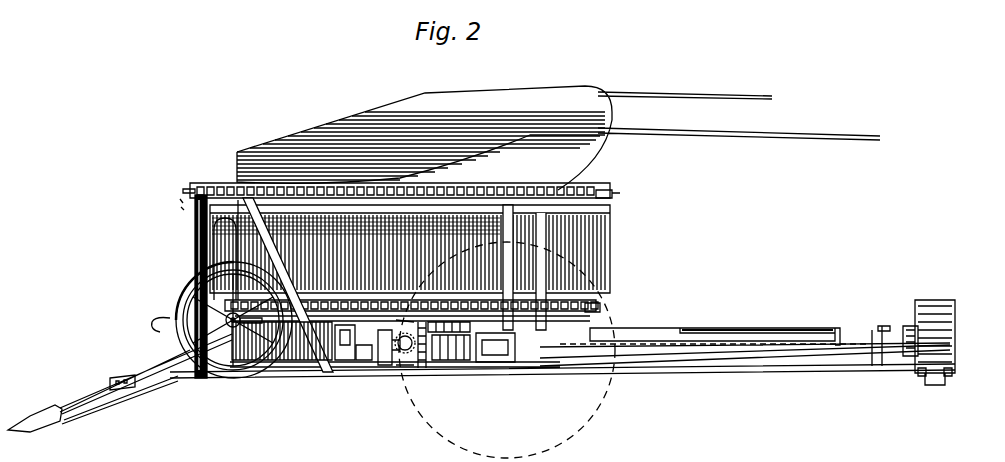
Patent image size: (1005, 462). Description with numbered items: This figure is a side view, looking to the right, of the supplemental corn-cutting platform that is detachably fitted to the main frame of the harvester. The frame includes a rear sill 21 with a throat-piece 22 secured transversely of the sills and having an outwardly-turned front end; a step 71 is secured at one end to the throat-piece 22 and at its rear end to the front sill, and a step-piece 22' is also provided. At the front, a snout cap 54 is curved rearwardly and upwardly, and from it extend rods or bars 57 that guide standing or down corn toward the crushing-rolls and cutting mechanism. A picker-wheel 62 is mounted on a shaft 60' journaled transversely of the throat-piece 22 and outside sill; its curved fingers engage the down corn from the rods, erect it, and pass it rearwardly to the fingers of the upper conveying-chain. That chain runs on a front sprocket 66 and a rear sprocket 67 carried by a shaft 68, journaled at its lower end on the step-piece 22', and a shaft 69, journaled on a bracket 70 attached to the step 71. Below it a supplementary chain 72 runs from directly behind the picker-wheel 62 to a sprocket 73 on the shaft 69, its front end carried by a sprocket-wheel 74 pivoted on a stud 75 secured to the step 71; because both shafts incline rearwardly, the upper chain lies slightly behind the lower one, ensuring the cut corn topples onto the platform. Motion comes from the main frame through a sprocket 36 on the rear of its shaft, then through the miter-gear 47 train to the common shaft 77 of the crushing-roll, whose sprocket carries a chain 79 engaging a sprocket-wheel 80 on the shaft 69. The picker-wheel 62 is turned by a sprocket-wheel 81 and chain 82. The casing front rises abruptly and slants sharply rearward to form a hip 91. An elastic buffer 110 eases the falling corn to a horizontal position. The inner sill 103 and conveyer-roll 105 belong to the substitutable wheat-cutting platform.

The hip 91 is at (272, 162).
The front sprocket 66 is at (205, 184).
The shaft 60' is at (200, 286).
The shaft 68 is at (410, 249).
The inner sill 103 is at (420, 204).
The rear sprocket 67 is at (609, 199).
The shaft 69 is at (557, 271).
The sprocket-wheel 74 is at (340, 302).
The sprocket 73 is at (600, 303).
The sprocket-wheel 80 is at (562, 320).
The sprocket-wheel 81 is at (192, 302).
The picker-wheel 62 is at (176, 306).
The rods or bars 57 is at (645, 347).
The conveyer-roll 105 is at (715, 328).
The rear sill 21 is at (884, 327).
The sprocket 36 is at (908, 325).
The buffer 110 is at (956, 322).
The throat-piece 22 is at (532, 379).
The step-piece 22' is at (264, 307).
The cap 54 is at (52, 410).
The stud 75 is at (312, 340).
The supplementary chain 72 is at (347, 345).
The chain 82 is at (362, 362).
The shaft 77 is at (398, 350).
The miter-gear 47 is at (405, 352).
The chain 79 is at (450, 335).
The step 71 is at (468, 330).
The bracket 70 is at (500, 343).